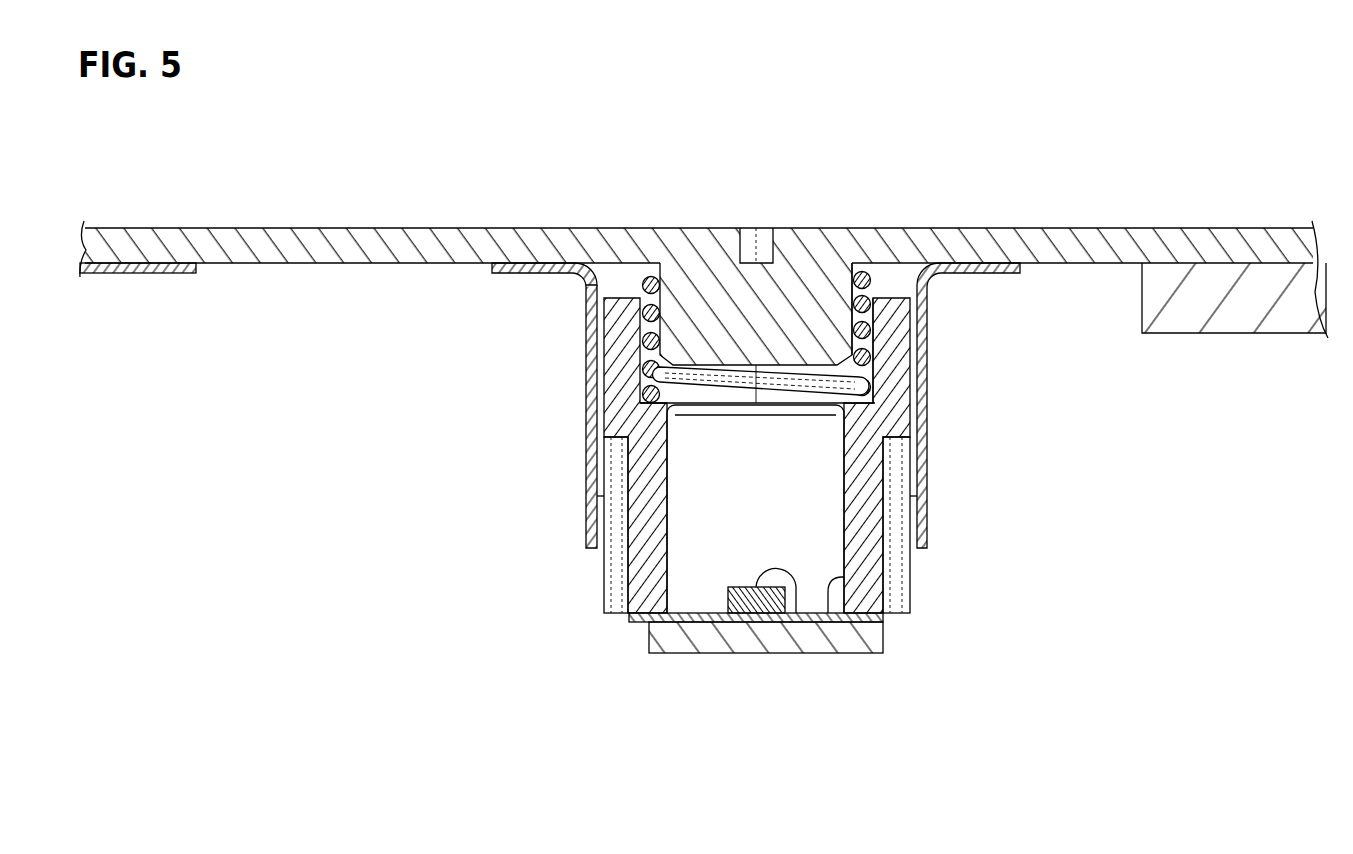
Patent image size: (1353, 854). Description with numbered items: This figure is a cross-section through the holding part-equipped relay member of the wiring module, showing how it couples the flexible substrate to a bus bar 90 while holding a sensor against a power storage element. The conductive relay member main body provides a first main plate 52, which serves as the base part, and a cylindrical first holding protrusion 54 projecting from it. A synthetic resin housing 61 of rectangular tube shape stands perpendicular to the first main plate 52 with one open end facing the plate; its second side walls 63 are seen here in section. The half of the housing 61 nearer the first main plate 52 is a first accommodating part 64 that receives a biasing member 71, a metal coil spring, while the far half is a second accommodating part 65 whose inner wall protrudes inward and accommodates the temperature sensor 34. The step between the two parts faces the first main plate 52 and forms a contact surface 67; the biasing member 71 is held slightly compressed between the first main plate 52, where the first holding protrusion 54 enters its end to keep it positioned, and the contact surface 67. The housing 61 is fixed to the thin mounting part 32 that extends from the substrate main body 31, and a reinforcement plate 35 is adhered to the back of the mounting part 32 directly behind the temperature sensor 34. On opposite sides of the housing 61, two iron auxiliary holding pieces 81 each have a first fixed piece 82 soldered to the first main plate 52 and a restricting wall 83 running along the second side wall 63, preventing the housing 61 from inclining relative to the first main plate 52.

The substrate main body 31 is at (147, 272).
The mounting part 32 is at (645, 618).
The temperature sensor 34 is at (790, 600).
The reinforcement plate 35 is at (703, 653).
The first main plate 52 is at (370, 242).
The first holding protrusion 54 is at (710, 330).
The housing 61 is at (936, 588).
The second side wall 63 is at (902, 400).
The first accommodating part 64 is at (855, 355).
The second accommodating part 65 is at (832, 578).
The contact surface 67 is at (872, 385).
The biasing member 71 is at (862, 268).
The auxiliary holding piece 81 is at (523, 413).
The first fixed piece 82 is at (543, 272).
The restricting wall 83 is at (592, 437).
The bus bar 90 is at (1238, 320).